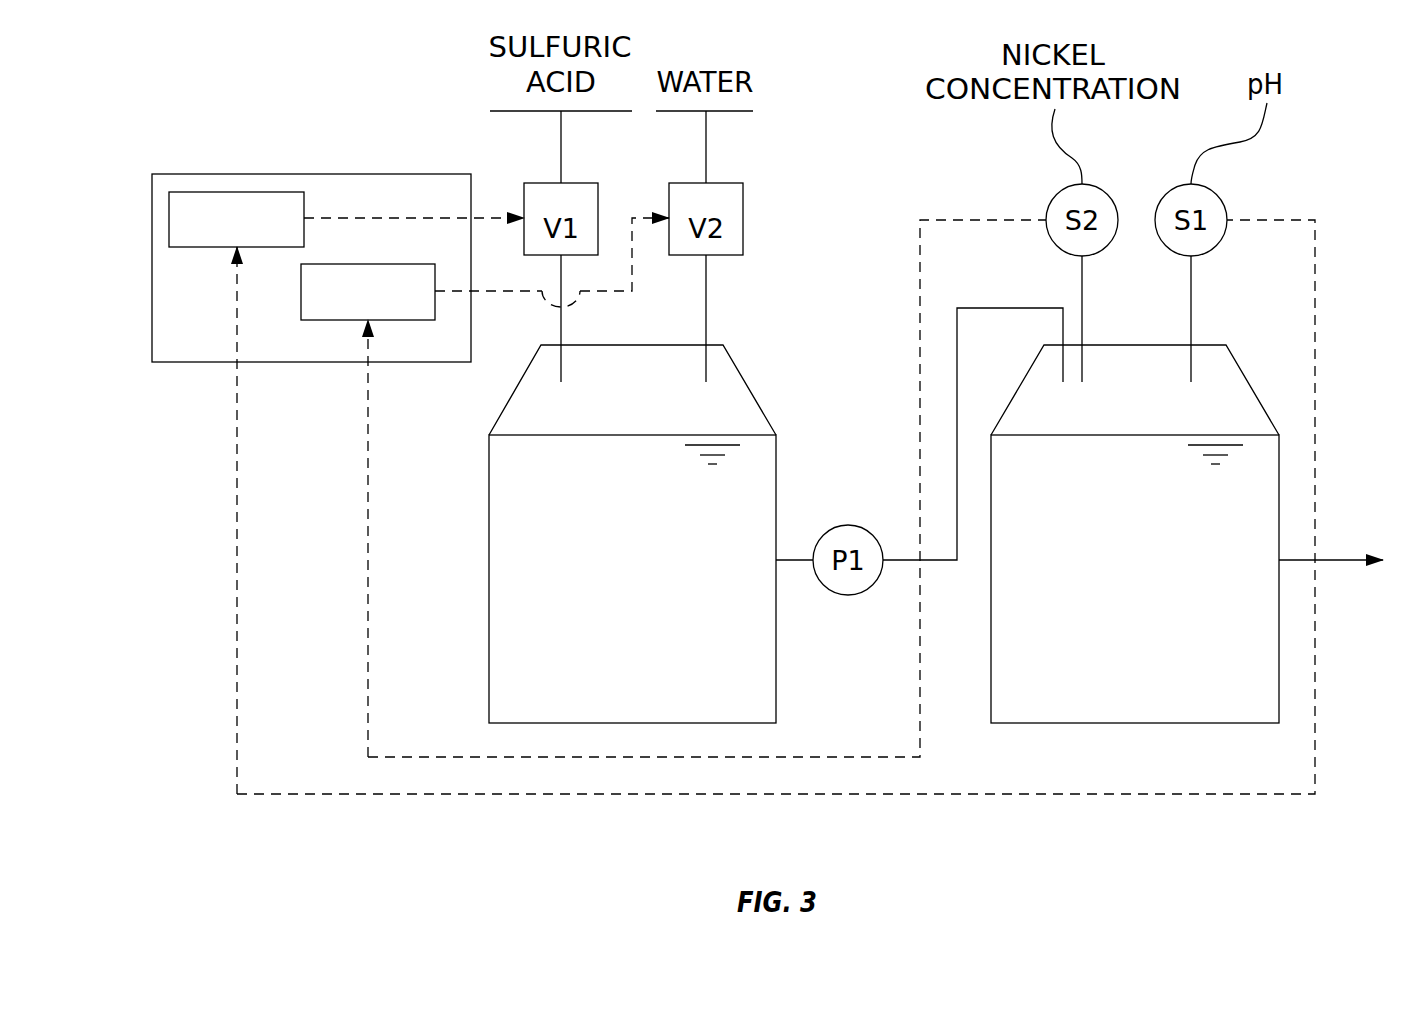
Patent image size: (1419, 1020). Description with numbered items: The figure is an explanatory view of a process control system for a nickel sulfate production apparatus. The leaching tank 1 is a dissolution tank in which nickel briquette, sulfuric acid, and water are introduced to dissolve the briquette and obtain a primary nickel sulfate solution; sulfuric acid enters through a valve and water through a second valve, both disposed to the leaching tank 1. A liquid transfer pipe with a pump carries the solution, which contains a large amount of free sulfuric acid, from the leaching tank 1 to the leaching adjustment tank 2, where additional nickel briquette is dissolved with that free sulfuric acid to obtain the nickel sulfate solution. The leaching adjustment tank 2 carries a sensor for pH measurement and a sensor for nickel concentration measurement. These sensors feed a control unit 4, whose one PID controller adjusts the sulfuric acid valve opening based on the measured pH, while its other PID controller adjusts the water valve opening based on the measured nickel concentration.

The leaching tank 1 is at (623, 723).
The leaching adjustment tank 2 is at (1116, 723).
The control unit 4 is at (310, 174).